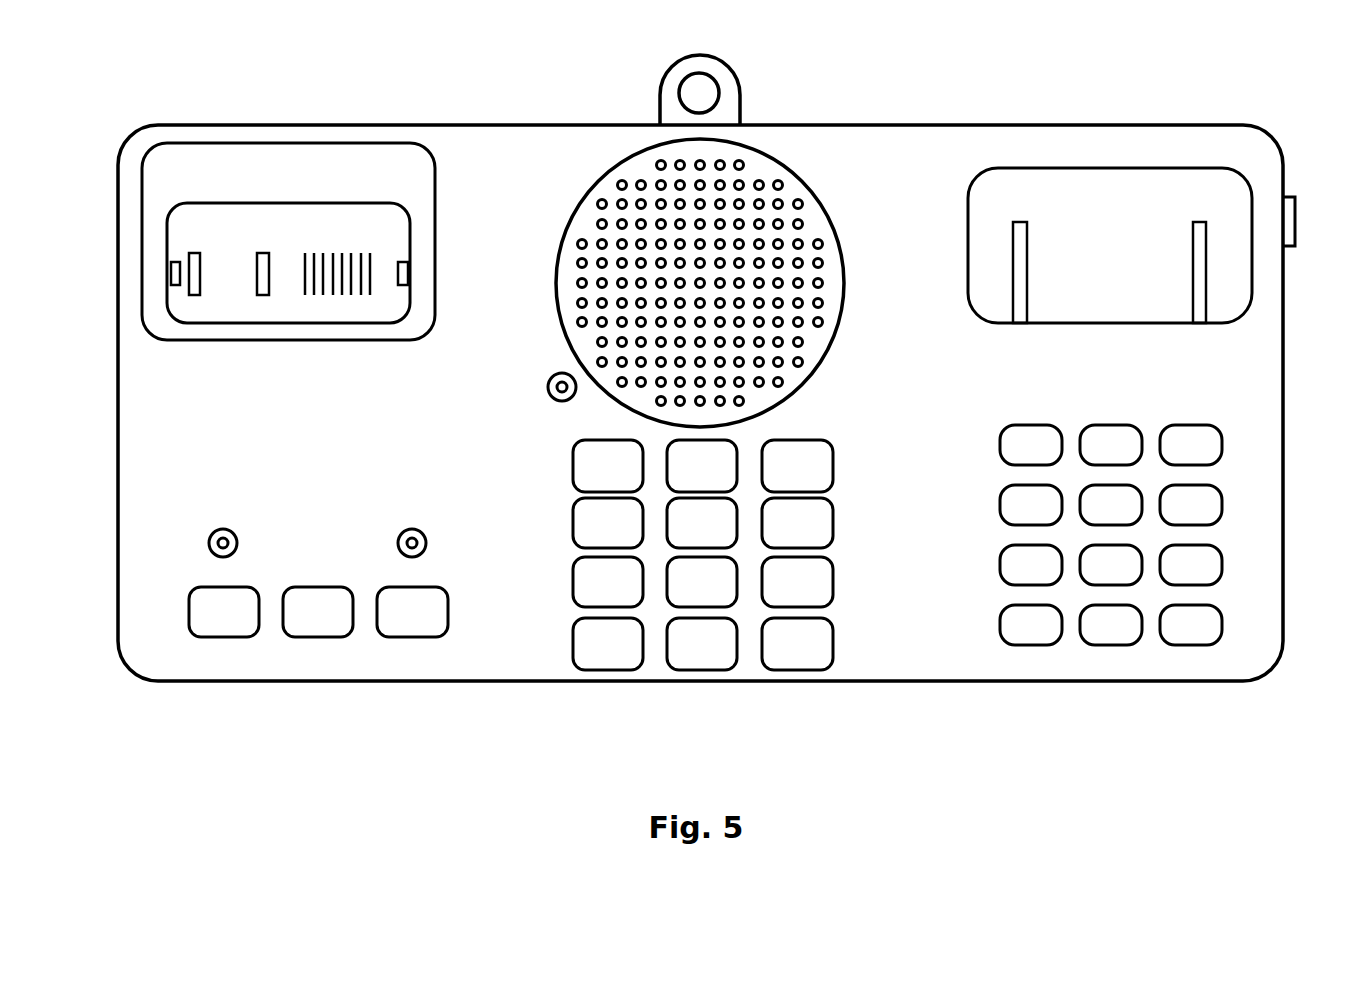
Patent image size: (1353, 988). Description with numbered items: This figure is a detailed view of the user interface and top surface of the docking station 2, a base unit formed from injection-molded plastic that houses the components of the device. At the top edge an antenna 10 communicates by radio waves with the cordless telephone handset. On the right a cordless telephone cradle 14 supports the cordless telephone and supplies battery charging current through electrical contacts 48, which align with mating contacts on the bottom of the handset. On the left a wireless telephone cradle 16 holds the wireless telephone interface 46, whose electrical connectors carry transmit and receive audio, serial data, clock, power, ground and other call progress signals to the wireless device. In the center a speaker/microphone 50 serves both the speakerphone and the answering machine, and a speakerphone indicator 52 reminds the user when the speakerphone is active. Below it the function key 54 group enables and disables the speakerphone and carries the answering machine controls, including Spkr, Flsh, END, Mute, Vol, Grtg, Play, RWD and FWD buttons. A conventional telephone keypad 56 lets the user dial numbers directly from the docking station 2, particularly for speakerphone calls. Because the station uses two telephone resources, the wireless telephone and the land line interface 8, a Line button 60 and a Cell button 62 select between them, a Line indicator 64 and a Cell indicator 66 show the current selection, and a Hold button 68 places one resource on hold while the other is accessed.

The docking station 2 is at (528, 124).
The land line interface 8 is at (1296, 206).
The antenna 10 is at (698, 74).
The cordless telephone cradle 14 is at (983, 170).
The wireless telephone cradle 16 is at (268, 143).
The wireless telephone interface 46 is at (343, 203).
The electrical contacts 48 is at (1193, 280).
The speaker/microphone 50 is at (598, 183).
The speakerphone indicator 52 is at (554, 375).
The function key 54 is at (847, 688).
The telephone keypad 56 is at (998, 425).
The Line button 60 is at (235, 637).
The Cell button 62 is at (425, 637).
The Line indicator 64 is at (214, 530).
The Cell indicator 66 is at (422, 530).
The Hold button 68 is at (330, 637).